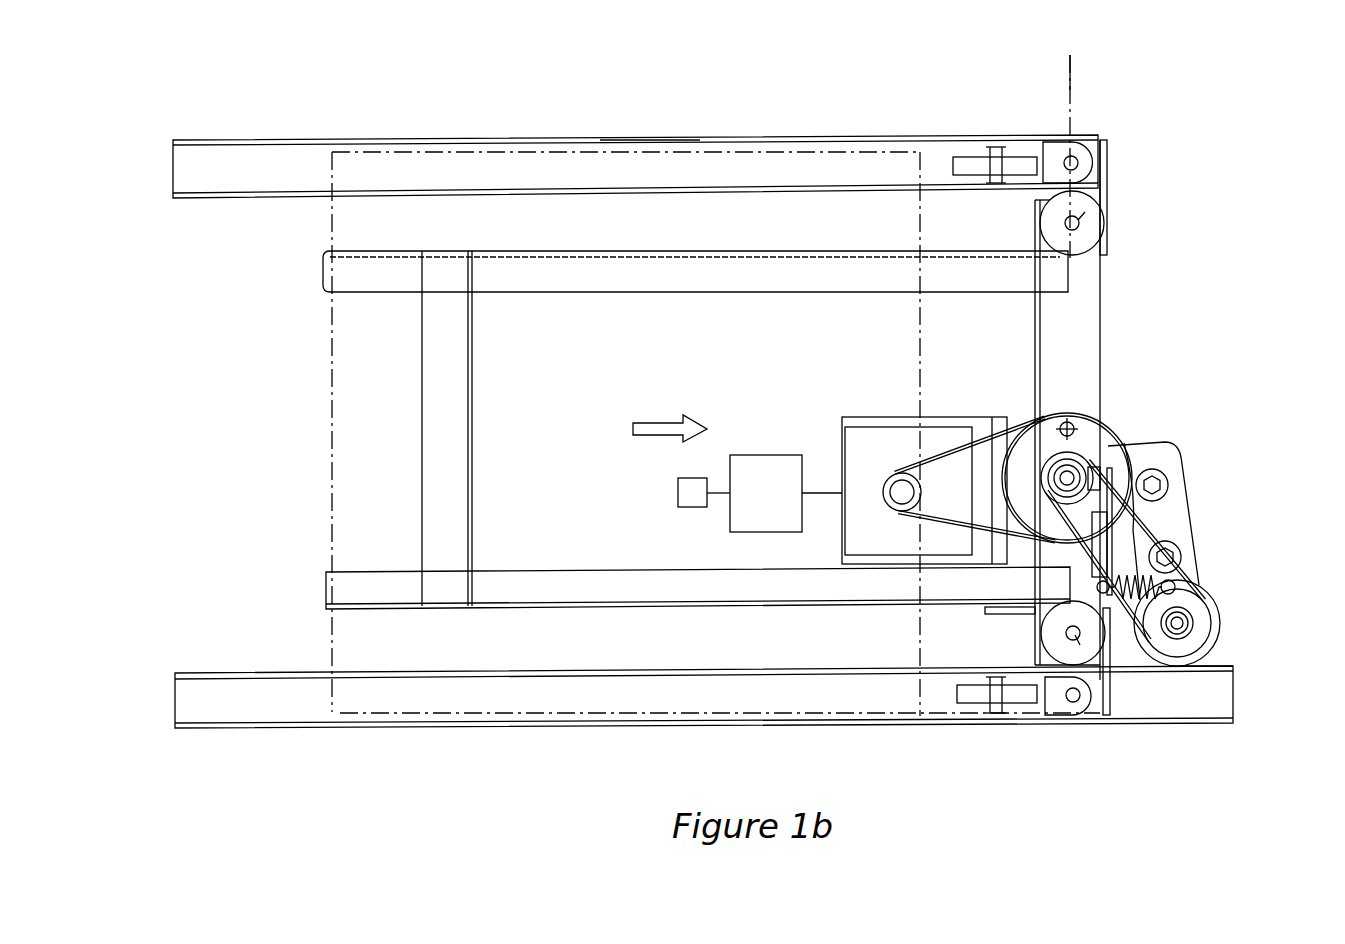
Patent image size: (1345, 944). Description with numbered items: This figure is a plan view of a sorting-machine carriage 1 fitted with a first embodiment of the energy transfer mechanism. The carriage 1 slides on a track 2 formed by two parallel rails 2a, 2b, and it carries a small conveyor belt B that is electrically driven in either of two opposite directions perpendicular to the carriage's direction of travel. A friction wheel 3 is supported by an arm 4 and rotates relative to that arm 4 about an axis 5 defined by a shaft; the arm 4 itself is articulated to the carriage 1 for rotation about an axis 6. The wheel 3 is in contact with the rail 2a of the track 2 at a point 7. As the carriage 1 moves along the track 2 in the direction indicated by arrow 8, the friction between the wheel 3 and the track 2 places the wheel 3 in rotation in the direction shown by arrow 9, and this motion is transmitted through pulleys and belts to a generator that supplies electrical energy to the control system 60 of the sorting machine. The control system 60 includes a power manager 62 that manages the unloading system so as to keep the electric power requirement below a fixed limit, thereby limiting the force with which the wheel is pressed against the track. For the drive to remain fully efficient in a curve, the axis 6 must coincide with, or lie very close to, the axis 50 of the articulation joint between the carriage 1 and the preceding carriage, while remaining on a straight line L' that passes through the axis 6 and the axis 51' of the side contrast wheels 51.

The carriage 1 is at (1085, 345).
The track 2 is at (1232, 660).
The rail 2a is at (1210, 712).
The rail 2b is at (1010, 135).
The friction wheel 3 is at (1212, 605).
The arm 4 is at (1170, 512).
The axis 5 is at (1185, 622).
The axis 6 is at (1103, 442).
The point 7 is at (1182, 672).
The arrow 8 is at (658, 432).
The arrow 9 is at (1236, 640).
The axis 50 is at (1075, 420).
The side contrast wheels 51 is at (1058, 428).
The axis 51' is at (1134, 473).
The control system 60 is at (772, 456).
The power manager 62 is at (688, 510).
The conveyor belt B is at (752, 152).
The straight line L' is at (1094, 72).